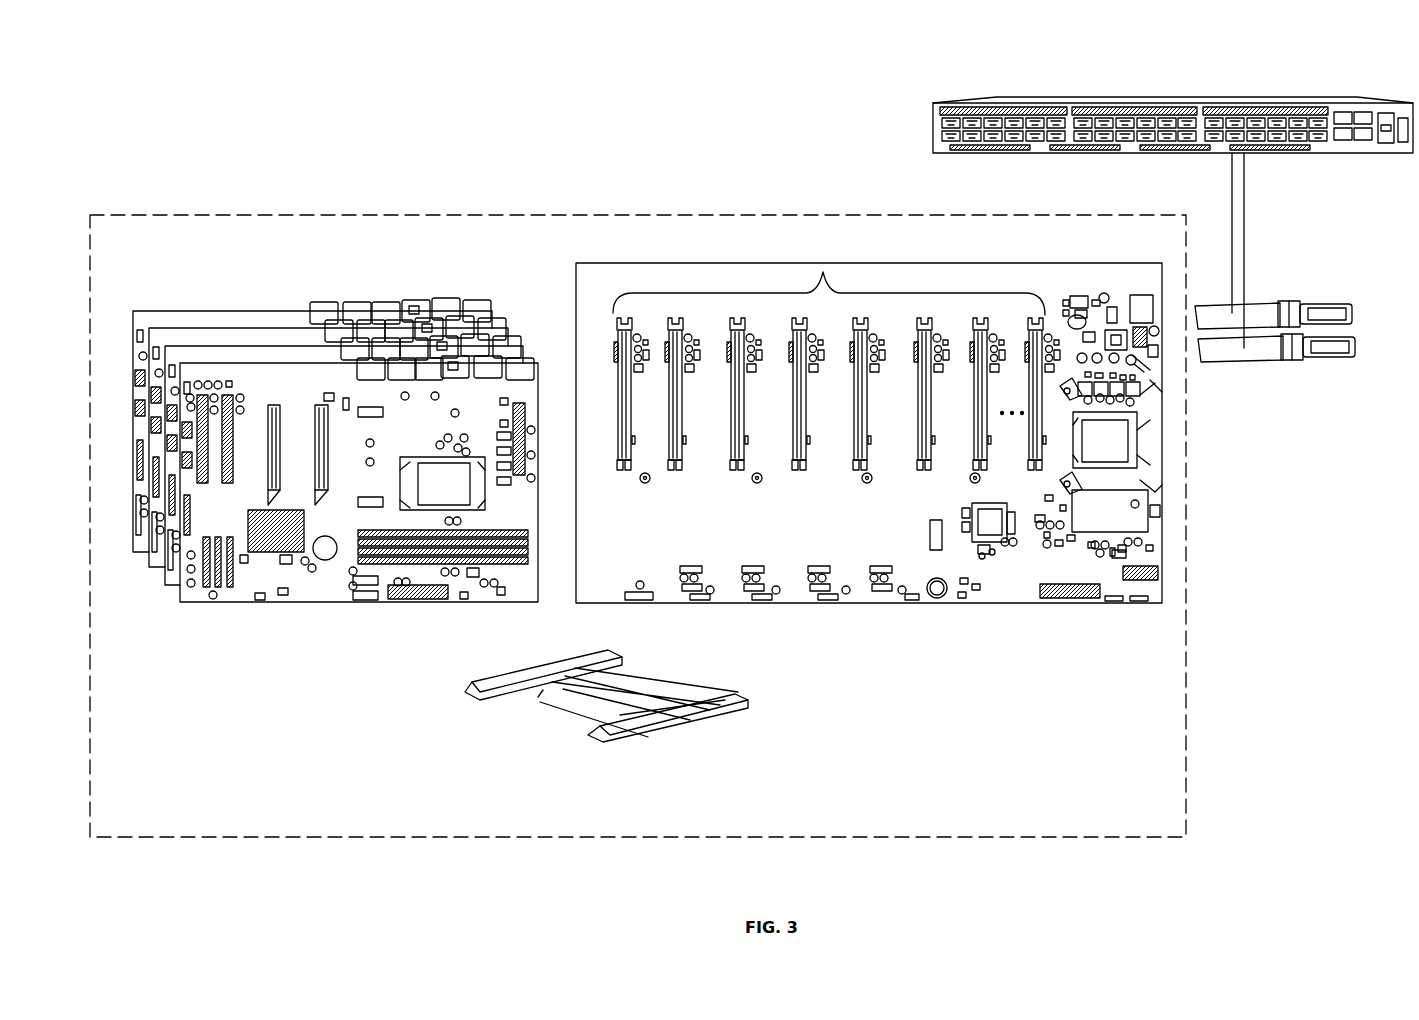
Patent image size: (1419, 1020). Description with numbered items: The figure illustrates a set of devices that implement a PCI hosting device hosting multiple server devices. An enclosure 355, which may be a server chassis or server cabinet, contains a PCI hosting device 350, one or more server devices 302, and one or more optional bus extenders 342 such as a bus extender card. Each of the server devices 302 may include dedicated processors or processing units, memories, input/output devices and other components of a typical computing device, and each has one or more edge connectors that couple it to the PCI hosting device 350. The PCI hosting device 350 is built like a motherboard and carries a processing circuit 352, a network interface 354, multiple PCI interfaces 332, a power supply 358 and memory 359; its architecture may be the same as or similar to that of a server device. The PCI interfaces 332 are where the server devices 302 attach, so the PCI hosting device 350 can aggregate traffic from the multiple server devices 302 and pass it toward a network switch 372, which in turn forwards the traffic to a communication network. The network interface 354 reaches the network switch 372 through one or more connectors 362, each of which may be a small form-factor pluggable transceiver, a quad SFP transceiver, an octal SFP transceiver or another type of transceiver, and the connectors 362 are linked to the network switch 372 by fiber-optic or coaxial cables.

The server devices 302 is at (218, 308).
The PCI interfaces 332 is at (790, 288).
The bus extender 342 is at (455, 700).
The PCI hosting device 350 is at (897, 527).
The processing circuit 352 is at (1123, 437).
The network interface 354 is at (1143, 294).
The enclosure 355 is at (718, 826).
The power supply 358 is at (1138, 517).
The memory 359 is at (993, 563).
The connectors 362 is at (1306, 296).
The network switch 372 is at (1183, 90).